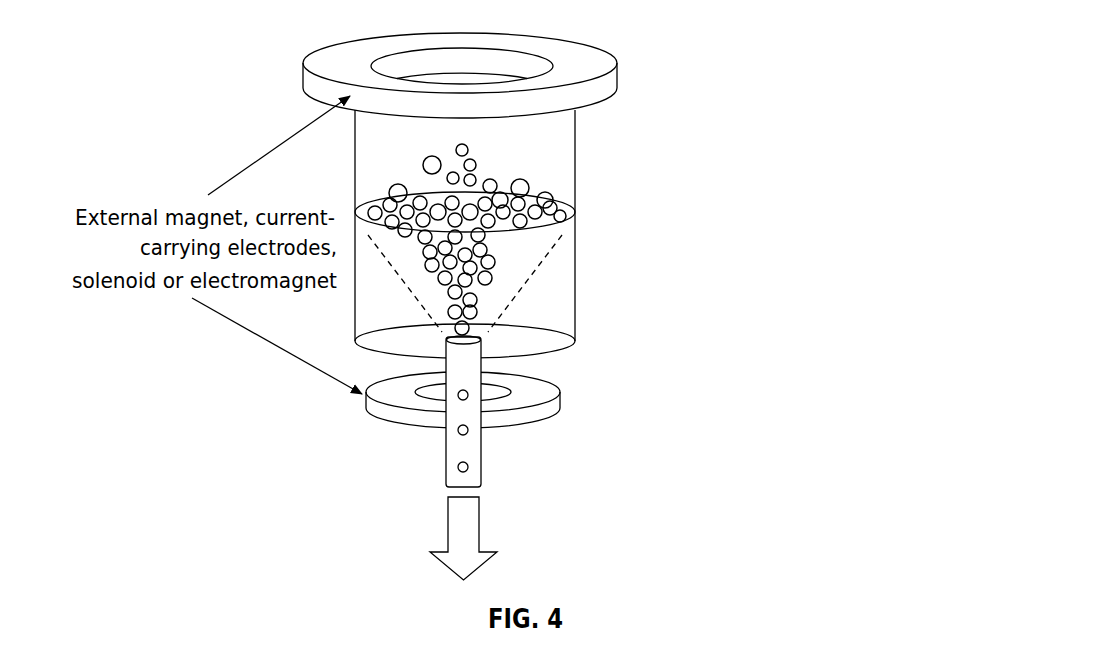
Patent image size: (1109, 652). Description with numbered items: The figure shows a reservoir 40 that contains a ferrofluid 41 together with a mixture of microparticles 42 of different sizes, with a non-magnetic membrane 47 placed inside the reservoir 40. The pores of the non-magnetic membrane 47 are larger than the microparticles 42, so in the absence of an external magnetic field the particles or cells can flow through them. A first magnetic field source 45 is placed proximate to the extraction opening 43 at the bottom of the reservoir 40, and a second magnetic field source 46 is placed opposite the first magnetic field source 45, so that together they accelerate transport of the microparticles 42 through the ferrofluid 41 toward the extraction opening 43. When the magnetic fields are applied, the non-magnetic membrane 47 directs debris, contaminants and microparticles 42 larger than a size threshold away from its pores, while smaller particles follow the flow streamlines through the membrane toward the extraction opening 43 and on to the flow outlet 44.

The reservoir 40 is at (577, 313).
The ferrofluid 41 is at (590, 134).
The microparticles 42 is at (560, 247).
The extraction opening 43 is at (445, 467).
The flow outlet 44 is at (448, 530).
The first magnetic field source 45 is at (368, 412).
The second magnetic field source 46 is at (352, 92).
The non-magnetic membrane 47 is at (558, 197).